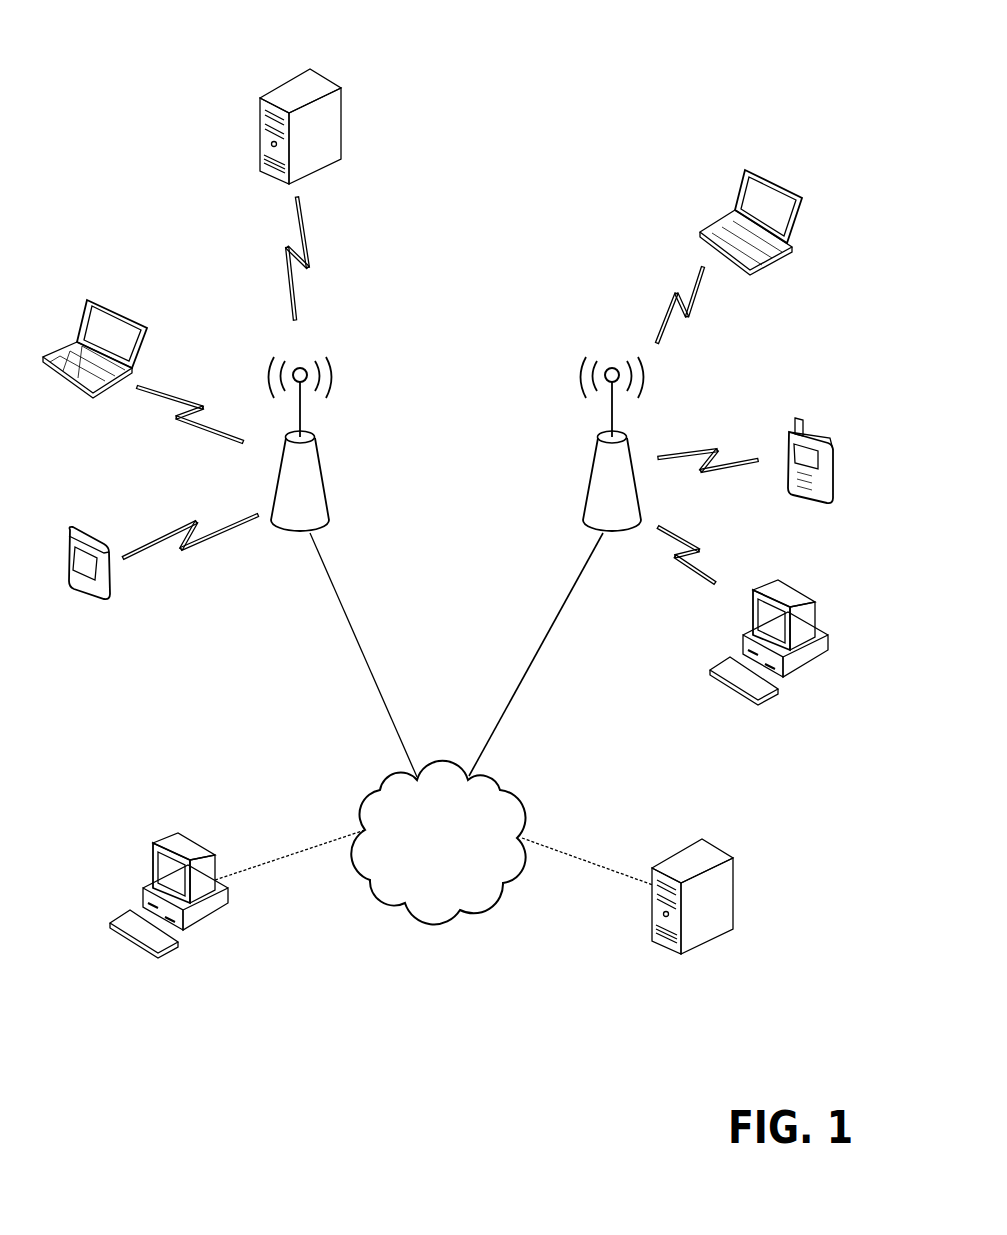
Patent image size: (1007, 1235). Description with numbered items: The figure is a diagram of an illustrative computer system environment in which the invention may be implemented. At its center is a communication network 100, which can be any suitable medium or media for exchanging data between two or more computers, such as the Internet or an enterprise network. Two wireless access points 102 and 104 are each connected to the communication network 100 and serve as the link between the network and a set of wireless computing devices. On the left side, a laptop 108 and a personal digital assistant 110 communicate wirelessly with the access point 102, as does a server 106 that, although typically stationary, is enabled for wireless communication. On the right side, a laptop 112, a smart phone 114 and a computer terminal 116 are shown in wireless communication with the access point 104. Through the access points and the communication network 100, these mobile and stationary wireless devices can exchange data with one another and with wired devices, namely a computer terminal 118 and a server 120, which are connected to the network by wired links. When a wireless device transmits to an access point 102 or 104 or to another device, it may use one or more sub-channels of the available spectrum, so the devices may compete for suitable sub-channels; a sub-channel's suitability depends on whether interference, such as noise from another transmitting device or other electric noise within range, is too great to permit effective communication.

The communication network 100 is at (438, 843).
The wireless access point 102 is at (313, 345).
The wireless access point 104 is at (570, 345).
The server 106 is at (318, 50).
The laptop 108 is at (102, 290).
The personal digital assistant 110 is at (80, 522).
The laptop 112 is at (760, 162).
The smart phone 114 is at (817, 420).
The computer terminal 116 is at (793, 585).
The computer terminal 118 is at (183, 810).
The server 120 is at (708, 813).